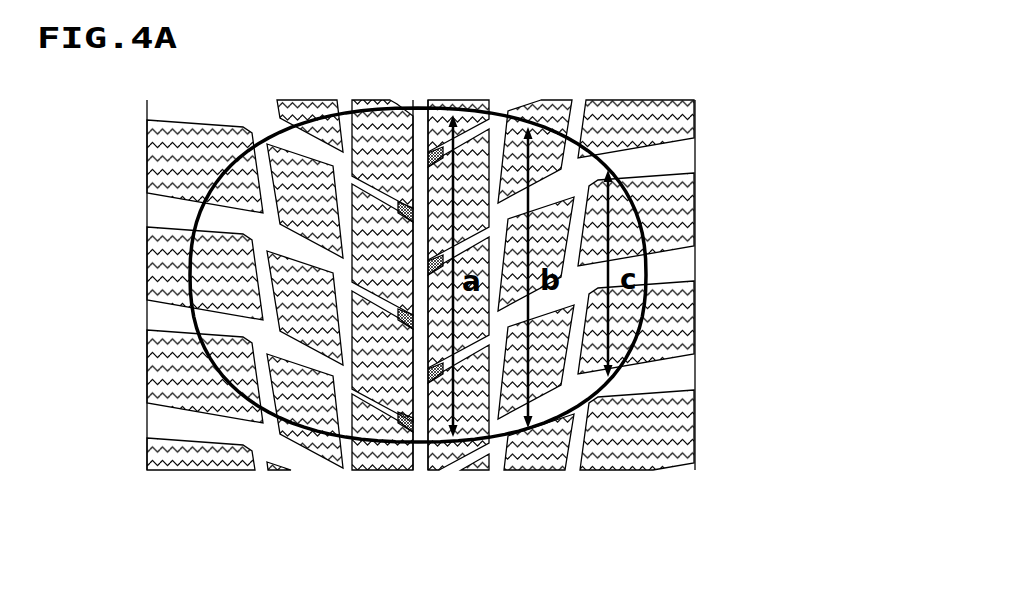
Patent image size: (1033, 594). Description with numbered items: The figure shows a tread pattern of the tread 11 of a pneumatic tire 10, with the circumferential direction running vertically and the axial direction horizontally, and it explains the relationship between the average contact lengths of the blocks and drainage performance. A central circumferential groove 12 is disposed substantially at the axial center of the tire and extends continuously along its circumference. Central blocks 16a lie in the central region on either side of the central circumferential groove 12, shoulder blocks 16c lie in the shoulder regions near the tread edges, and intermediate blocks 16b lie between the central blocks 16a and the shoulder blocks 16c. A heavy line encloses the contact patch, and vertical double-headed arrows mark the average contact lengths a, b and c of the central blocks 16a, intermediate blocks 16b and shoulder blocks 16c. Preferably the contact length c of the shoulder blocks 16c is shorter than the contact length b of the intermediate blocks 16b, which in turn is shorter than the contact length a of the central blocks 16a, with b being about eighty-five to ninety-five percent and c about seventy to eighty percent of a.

The pneumatic tire 10 is at (705, 128).
The tread 11 is at (697, 208).
The central circumferential groove 12 is at (421, 460).
The central blocks 16a is at (353, 460).
The intermediate blocks 16b is at (272, 447).
The shoulder blocks 16c is at (203, 467).